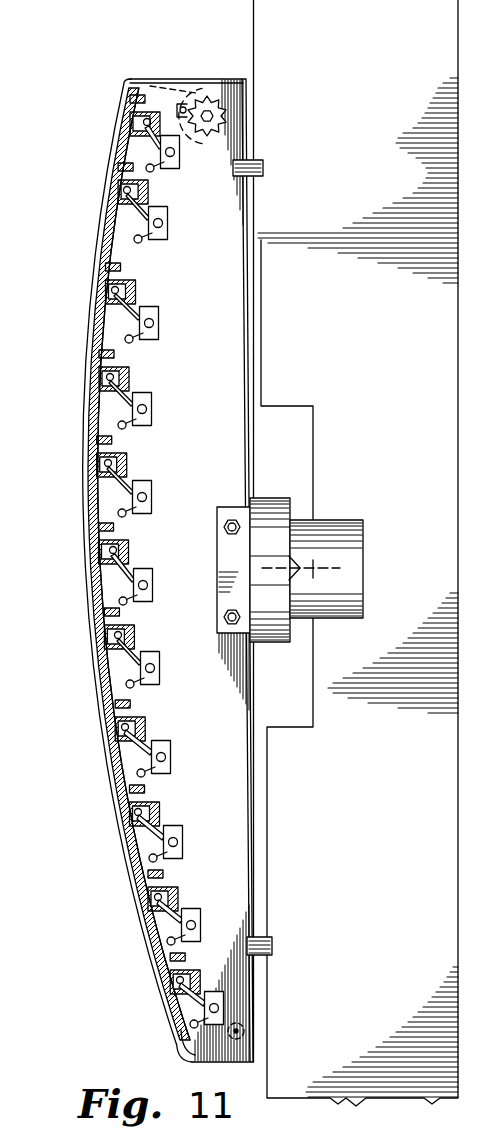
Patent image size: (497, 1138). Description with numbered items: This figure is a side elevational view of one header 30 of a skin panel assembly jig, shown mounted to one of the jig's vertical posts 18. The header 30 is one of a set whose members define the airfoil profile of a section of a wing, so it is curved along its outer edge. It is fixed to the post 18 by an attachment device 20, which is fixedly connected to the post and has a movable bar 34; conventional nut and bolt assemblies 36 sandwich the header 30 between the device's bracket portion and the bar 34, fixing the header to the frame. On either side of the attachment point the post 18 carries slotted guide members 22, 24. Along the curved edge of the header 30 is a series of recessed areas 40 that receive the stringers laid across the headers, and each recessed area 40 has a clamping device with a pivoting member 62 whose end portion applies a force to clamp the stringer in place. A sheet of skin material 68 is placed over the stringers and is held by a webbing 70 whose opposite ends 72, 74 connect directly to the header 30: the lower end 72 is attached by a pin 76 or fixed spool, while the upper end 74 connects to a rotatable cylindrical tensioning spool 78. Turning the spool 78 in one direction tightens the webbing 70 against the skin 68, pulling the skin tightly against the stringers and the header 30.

The vertical post 18 is at (370, 363).
The attachment device 20 is at (277, 617).
The slotted guide member 22 is at (260, 940).
The slotted guide member 24 is at (264, 168).
The header 30 is at (200, 404).
The movable bar 34 is at (233, 566).
The nut and bolt assembly 36 is at (234, 519).
The recessed area 40 is at (100, 292).
The pivoting member 62 is at (122, 418).
The skin material 68 is at (113, 797).
The webbing 70 is at (94, 684).
The lower end of strap 72 is at (184, 1052).
The upper end of strap 74 is at (134, 79).
The pin 76 is at (243, 1027).
The tensioning spool 78 is at (211, 76).